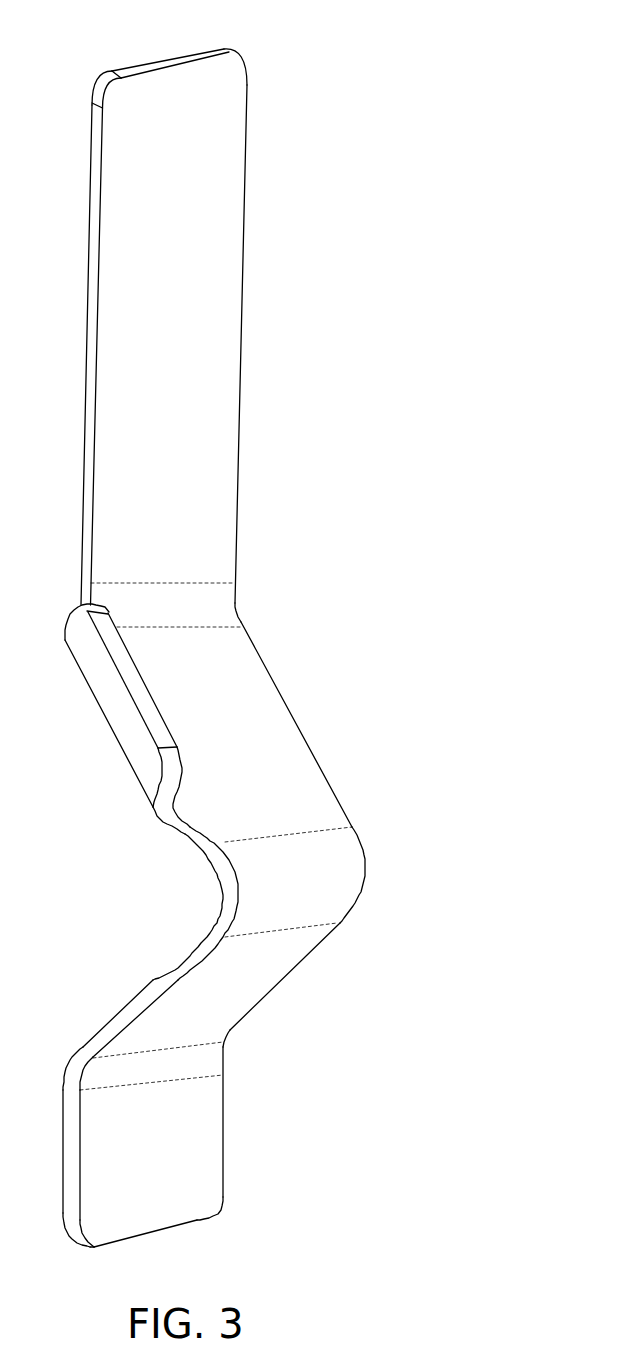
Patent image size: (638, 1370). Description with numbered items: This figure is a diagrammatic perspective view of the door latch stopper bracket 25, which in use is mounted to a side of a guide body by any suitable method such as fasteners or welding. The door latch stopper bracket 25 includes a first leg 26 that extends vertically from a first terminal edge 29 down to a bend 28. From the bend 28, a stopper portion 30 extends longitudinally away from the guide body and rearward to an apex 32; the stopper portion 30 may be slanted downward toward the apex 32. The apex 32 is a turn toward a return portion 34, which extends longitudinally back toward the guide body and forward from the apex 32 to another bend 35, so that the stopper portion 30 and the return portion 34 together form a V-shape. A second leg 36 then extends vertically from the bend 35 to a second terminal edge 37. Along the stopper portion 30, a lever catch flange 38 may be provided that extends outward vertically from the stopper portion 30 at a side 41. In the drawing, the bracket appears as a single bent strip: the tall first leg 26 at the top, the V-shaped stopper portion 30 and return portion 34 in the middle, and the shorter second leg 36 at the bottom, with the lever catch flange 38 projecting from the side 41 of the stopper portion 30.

The door latch stopper bracket 25 is at (396, 280).
The first leg 26 is at (105, 268).
The bend 28 is at (228, 608).
The first terminal edge 29 is at (157, 62).
The stopper portion 30 is at (293, 730).
The apex 32 is at (360, 868).
The return portion 34 is at (280, 982).
The bend 35 is at (217, 1055).
The second leg 36 is at (213, 1140).
The second terminal edge 37 is at (160, 1233).
The lever catch flange 38 is at (115, 717).
The side 41 is at (172, 825).